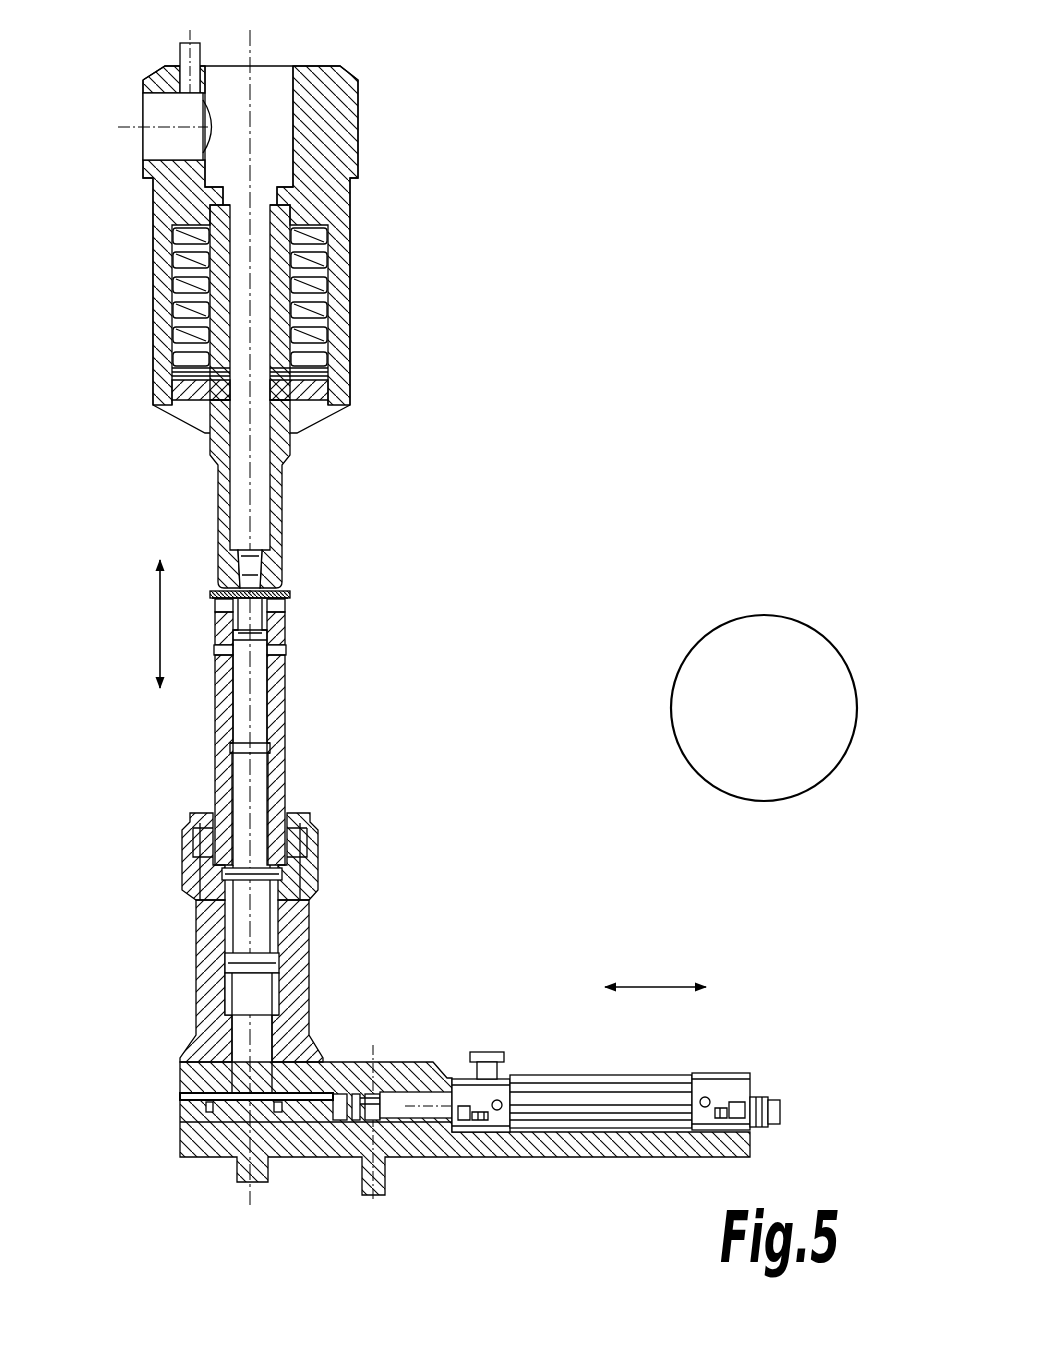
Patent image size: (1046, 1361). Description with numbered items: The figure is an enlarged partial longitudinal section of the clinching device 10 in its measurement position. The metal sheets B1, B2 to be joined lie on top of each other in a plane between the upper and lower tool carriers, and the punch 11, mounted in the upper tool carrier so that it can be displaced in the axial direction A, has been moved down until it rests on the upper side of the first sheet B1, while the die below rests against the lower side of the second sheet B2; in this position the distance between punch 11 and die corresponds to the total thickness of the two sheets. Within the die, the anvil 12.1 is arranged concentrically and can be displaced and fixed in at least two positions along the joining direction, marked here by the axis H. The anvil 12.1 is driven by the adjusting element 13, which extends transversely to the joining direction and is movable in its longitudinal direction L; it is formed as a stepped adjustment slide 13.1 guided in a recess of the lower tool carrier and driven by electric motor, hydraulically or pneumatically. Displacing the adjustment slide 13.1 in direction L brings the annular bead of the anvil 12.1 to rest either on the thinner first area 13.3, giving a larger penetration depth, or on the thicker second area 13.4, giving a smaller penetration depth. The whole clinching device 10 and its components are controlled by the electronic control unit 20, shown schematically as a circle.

The clinching tool 10 is at (422, 661).
The punch 11 is at (262, 504).
The anvil 12.1 is at (262, 704).
The adjusting element 13 is at (322, 1110).
The adjustment slide 13.1 is at (168, 1098).
The first area 13.3 is at (208, 1114).
The second area 13.4 is at (278, 1114).
The electronic control unit 20 is at (776, 726).
The vertical axis H is at (252, 46).
The axial direction A is at (137, 624).
The longitudinal direction L is at (655, 955).
The first metal sheet B1 is at (288, 591).
The second metal sheet B2 is at (290, 604).